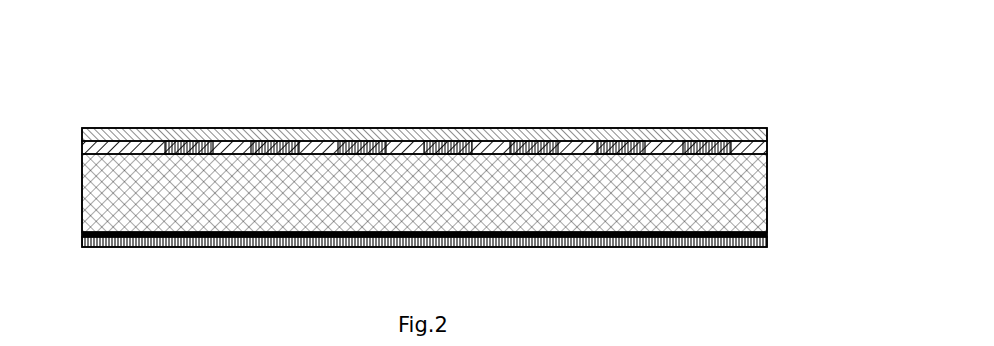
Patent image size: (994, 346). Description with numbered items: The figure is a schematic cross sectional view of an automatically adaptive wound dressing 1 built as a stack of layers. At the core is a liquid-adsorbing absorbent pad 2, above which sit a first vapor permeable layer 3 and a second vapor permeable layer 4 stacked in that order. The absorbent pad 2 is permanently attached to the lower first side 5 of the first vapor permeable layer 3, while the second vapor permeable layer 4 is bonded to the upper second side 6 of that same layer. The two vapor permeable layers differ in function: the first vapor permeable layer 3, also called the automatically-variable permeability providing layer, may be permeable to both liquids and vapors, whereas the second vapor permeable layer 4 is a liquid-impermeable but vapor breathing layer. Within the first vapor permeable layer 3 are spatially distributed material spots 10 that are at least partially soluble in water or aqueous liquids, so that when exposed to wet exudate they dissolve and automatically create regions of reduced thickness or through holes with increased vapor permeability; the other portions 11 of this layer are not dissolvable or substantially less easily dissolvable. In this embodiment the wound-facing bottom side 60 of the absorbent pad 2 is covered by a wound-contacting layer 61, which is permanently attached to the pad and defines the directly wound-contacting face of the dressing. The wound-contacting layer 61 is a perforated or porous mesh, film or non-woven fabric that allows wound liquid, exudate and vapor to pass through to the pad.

The automatically adaptive wound dressing 1 is at (682, 101).
The absorbent pad 2 is at (750, 214).
The first vapor permeable layer 3 is at (768, 150).
The second vapor permeable layer 4 is at (773, 136).
The lower first side 5 is at (748, 160).
The upper second side 6 is at (768, 143).
The material spots 10 is at (175, 143).
The other portions 11 is at (393, 143).
The wound-facing bottom side 60 is at (82, 233).
The wound-contacting layer 61 is at (102, 247).